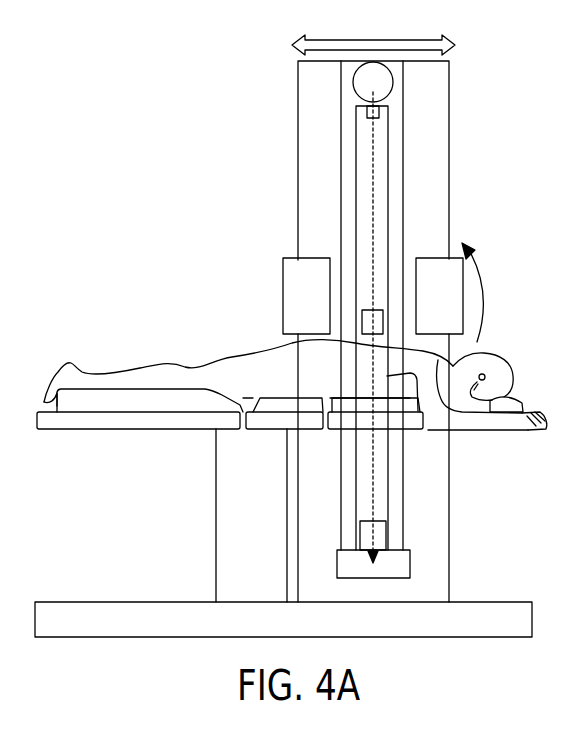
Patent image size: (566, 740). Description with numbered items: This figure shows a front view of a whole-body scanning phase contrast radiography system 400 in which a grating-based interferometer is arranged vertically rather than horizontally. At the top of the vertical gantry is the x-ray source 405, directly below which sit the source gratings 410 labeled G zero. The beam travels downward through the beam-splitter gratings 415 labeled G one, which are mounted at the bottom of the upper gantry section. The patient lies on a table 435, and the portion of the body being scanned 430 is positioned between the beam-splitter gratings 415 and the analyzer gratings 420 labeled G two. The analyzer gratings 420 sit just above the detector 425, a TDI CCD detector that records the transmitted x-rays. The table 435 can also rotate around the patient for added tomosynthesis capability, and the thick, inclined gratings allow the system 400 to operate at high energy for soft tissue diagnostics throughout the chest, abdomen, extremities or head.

The scanning phase contrast radiography system 400 is at (176, 128).
The x-ray source 405 is at (392, 86).
The source gratings (G0) 410 is at (380, 112).
The beam-splitter gratings (G1) 415 is at (362, 317).
The analyzer gratings (G2) 420 is at (386, 540).
The detector 425 is at (410, 568).
The portion of the body being scanned 430 is at (322, 338).
The table 435 is at (103, 430).